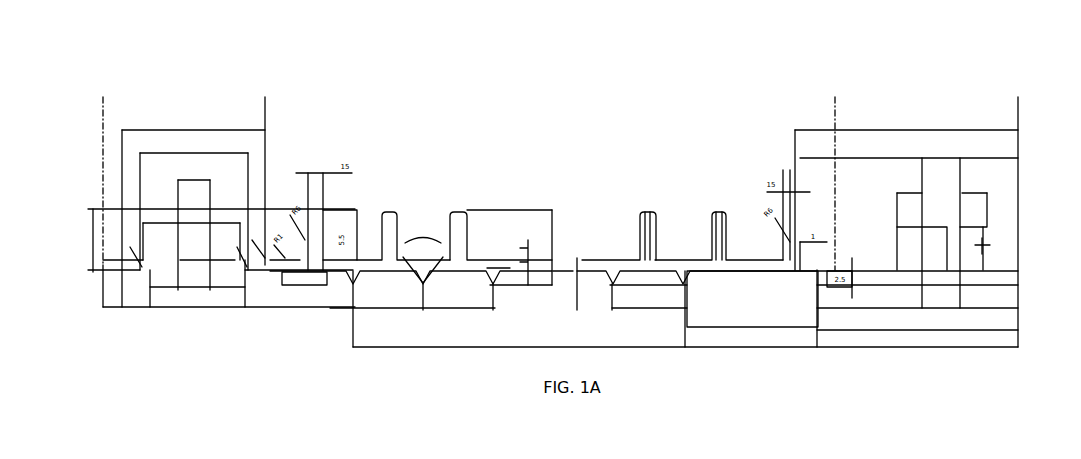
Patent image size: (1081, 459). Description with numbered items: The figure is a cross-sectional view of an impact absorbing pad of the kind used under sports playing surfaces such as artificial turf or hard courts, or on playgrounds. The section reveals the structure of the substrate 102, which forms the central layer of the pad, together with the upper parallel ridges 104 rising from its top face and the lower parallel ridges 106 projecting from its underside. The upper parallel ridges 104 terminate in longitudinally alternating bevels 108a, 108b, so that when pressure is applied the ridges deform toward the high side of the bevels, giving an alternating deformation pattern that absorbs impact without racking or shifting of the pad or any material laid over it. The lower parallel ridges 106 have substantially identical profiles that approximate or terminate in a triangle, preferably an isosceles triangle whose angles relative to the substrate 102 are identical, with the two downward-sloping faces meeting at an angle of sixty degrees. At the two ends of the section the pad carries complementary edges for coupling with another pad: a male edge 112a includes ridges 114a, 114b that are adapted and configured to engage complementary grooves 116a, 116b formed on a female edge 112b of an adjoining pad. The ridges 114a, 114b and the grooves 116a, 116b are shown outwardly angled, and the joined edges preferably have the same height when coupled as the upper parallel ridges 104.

The substrate 102 is at (1013, 64).
The upper parallel ridges 104 is at (636, 228).
The lower parallel ridges 106 is at (752, 299).
The longitudinally alternating bevel 108a is at (383, 208).
The longitudinally alternating bevel 108b is at (465, 210).
The male edge 112a is at (835, 97).
The female edge 112b is at (103, 97).
The ridge 114a is at (895, 240).
The ridge 114b is at (990, 216).
The complementary groove 116a is at (162, 250).
The complementary groove 116b is at (238, 250).